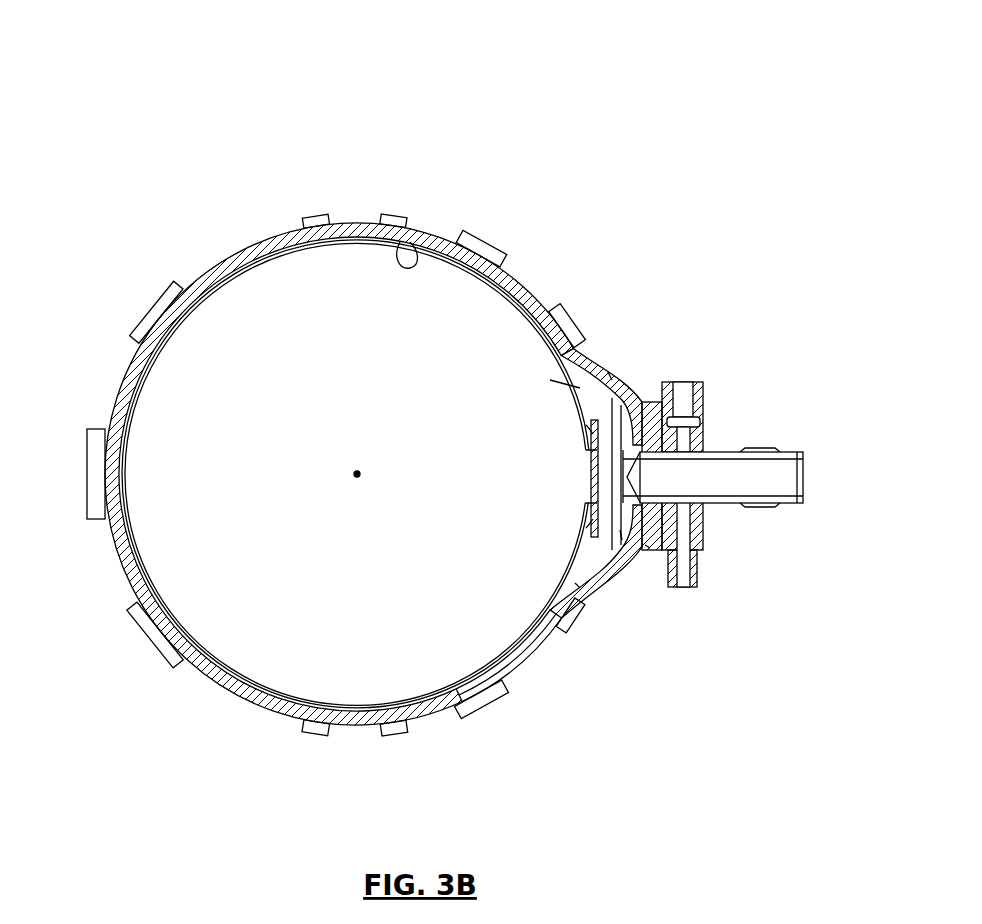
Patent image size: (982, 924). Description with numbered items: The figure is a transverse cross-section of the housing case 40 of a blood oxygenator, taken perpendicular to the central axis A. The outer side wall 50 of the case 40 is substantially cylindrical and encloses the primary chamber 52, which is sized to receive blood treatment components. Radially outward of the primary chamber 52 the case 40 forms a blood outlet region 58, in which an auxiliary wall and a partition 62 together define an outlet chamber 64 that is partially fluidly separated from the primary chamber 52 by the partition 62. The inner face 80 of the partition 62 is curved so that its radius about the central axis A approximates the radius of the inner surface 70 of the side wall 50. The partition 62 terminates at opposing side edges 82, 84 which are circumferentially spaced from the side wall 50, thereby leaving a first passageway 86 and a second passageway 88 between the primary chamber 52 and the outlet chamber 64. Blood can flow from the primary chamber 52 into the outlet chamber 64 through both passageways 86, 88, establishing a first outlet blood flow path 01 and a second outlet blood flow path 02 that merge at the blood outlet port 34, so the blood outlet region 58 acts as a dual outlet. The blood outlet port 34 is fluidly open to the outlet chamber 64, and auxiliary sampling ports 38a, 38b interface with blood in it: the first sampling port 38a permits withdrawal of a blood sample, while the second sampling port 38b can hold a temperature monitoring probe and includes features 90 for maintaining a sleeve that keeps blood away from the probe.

The case 40 is at (415, 103).
The primary chamber 52 is at (285, 283).
The inner surface of the side wall 70 is at (412, 240).
The first passageway 86 is at (563, 375).
The first outlet blood flow path 01 is at (616, 398).
The blood outlet region 58 is at (731, 452).
The outlet chamber 64 is at (615, 446).
The features for maintaining a sleeve 90 is at (681, 392).
The second sampling port 38b is at (751, 385).
The blood outlet port 34 is at (762, 444).
The first side edge of the partition 82 is at (593, 432).
The inner face of the partition 80 is at (592, 452).
The second side edge of the partition 84 is at (590, 518).
The partition 62 is at (650, 547).
The second outlet blood flow path 02 is at (618, 512).
The first sampling port 38a is at (707, 568).
The second passageway 88 is at (577, 585).
The outer side wall 50 is at (231, 697).
The central axis A is at (357, 474).